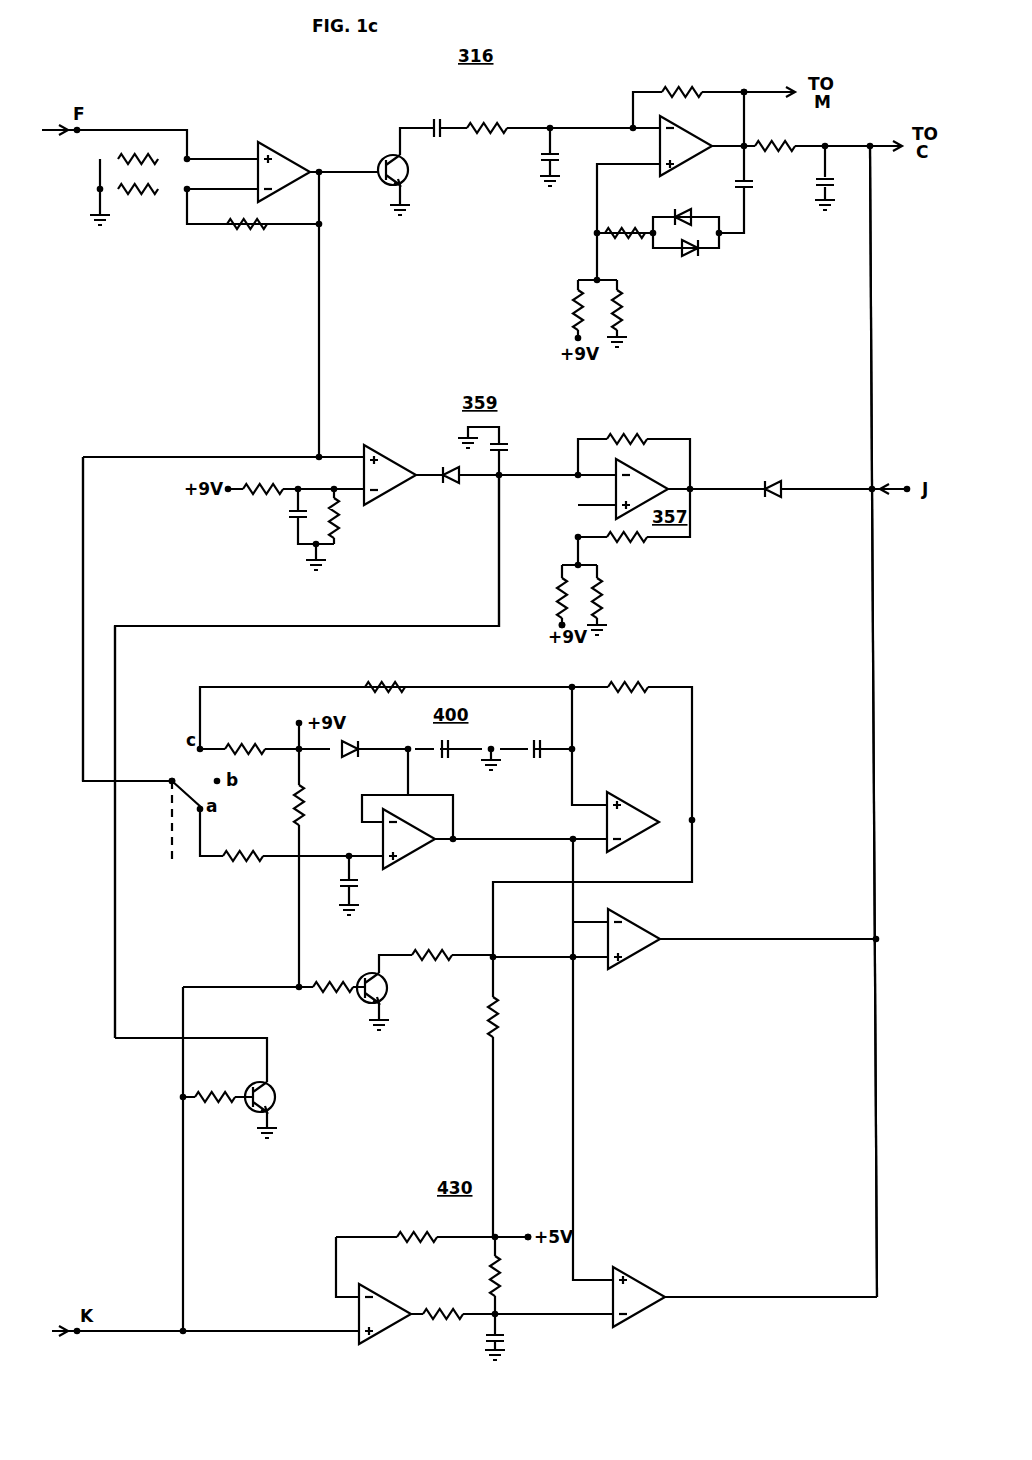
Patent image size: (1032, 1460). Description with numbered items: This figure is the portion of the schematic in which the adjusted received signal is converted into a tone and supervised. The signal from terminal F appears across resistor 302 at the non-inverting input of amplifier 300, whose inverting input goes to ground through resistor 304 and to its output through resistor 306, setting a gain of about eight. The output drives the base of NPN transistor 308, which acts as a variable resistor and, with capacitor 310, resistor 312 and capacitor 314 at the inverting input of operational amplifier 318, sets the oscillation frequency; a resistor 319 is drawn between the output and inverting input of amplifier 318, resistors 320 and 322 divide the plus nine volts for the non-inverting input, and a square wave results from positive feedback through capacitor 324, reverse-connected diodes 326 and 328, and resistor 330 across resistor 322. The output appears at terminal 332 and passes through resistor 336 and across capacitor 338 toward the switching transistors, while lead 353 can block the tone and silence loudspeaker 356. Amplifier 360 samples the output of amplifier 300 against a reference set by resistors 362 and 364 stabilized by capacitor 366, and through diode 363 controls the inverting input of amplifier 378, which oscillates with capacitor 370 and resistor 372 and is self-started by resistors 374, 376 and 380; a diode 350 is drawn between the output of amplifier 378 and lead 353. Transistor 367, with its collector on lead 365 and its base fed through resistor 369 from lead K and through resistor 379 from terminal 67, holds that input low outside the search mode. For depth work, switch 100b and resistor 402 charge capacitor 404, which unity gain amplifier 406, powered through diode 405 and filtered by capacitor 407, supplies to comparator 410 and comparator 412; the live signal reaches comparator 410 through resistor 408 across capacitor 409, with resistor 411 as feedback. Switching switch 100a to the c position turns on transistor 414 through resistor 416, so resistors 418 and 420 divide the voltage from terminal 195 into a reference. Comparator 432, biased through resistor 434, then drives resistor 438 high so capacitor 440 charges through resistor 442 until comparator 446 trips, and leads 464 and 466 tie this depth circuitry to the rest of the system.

The amplifier 300 is at (276, 155).
The resistor 302 is at (148, 158).
The resistor 304 is at (148, 189).
The resistor 306 is at (250, 230).
The NPN transistor 308 is at (404, 178).
The capacitor 310 is at (440, 118).
The resistor 312 is at (490, 118).
The capacitor 314 is at (557, 152).
The operational amplifier 318 is at (686, 136).
The feedback resistor 319 is at (688, 84).
The resistor 320 is at (570, 308).
The resistor 322 is at (622, 306).
The capacitor 324 is at (750, 180).
The diode 326 is at (680, 211).
The diode 328 is at (700, 256).
The resistor 330 is at (628, 242).
The terminal 332 is at (744, 84).
The resistor 336 is at (778, 138).
The capacitor 338 is at (822, 190).
The diode 350 is at (781, 480).
The lead 353 is at (870, 343).
The loudspeaker 356 is at (454, 626).
The amplifier 360 is at (394, 459).
The resistor 362 is at (264, 480).
The diode 363 is at (450, 484).
The resistor 364 is at (338, 526).
The lead 365 is at (115, 888).
The capacitor 366 is at (292, 522).
The transistor 367 is at (276, 1099).
The resistor 369 is at (212, 1088).
The capacitor 370 is at (506, 442).
The resistor 372 is at (632, 432).
The resistor 374 is at (556, 596).
The resistor 376 is at (602, 596).
The amplifier 378 is at (640, 472).
The resistor 379 is at (294, 803).
The resistor 380 is at (632, 545).
The resistor 402 is at (246, 864).
The capacitor 404 is at (356, 888).
The diode 405 is at (358, 740).
The unity gain amplifier 406 is at (418, 858).
The filtering capacitor 407 is at (440, 760).
The resistor 408 is at (392, 680).
The stabilizing capacitor 409 is at (546, 730).
The comparator 410 is at (626, 802).
The resistor 411 is at (634, 680).
The comparator 412 is at (248, 757).
The transistor 414 is at (388, 990).
The resistor 416 is at (336, 978).
The resistor 418 is at (436, 946).
The resistor 420 is at (487, 1016).
The comparator 432 is at (390, 1298).
The resistor 434 is at (418, 1228).
The resistor 438 is at (448, 1322).
The capacitor 440 is at (504, 1342).
The resistor 442 is at (500, 1274).
The comparator 446 is at (638, 1265).
The lead 464 is at (83, 592).
The lead 466 is at (870, 775).
The +9 volt bias terminal 67 is at (560, 626).
The +5 volt terminal 195 is at (526, 1232).
The switch 100a is at (177, 878).
The switch 100b is at (158, 770).